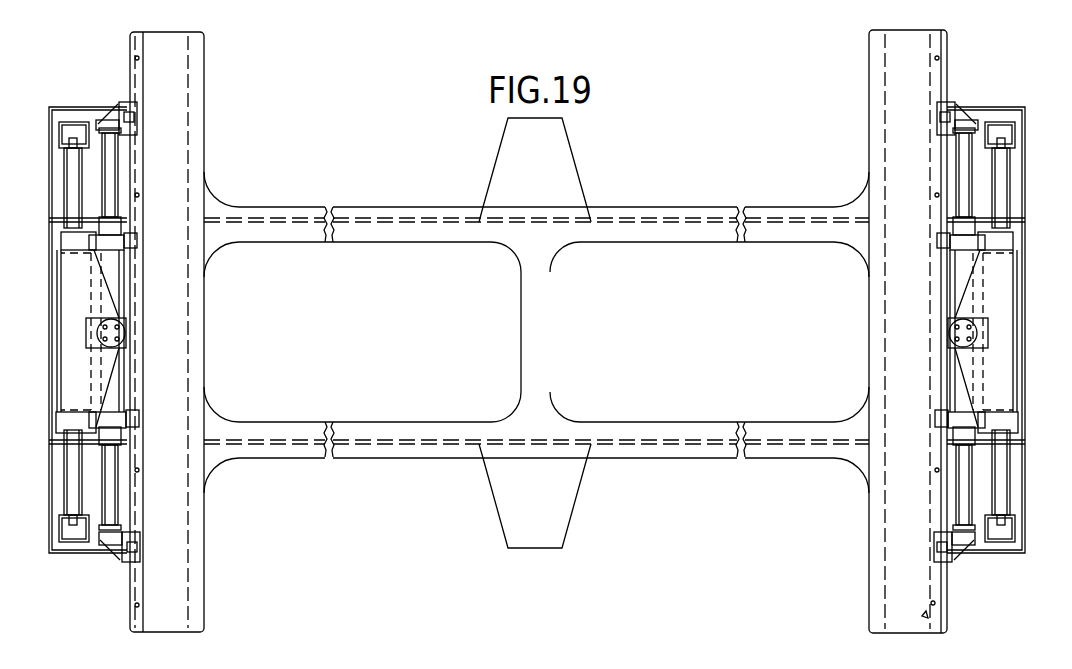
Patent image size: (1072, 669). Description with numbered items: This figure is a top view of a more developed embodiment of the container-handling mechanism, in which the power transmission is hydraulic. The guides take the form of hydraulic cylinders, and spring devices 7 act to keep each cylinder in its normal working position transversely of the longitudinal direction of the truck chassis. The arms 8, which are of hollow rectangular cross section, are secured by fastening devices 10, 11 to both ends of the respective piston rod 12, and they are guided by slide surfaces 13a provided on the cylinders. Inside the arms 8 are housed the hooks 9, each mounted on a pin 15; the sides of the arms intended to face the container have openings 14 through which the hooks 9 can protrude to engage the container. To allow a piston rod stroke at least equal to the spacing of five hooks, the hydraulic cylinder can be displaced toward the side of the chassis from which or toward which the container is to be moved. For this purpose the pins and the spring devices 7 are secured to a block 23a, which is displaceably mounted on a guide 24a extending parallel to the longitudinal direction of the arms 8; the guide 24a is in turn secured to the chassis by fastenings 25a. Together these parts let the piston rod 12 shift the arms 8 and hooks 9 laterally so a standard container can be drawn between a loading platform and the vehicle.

The spring device 7 is at (976, 243).
The arm 8 is at (941, 627).
The hook 9 is at (924, 617).
The fastening device 10 is at (945, 104).
The fastening device 11 is at (960, 124).
The piston rod 12 is at (1002, 188).
The slide surface 13a is at (937, 240).
The opening 14 is at (926, 575).
The pin 15 is at (936, 603).
The block 23a is at (1003, 368).
The guide 24a is at (1003, 468).
The fastening 25a is at (998, 538).